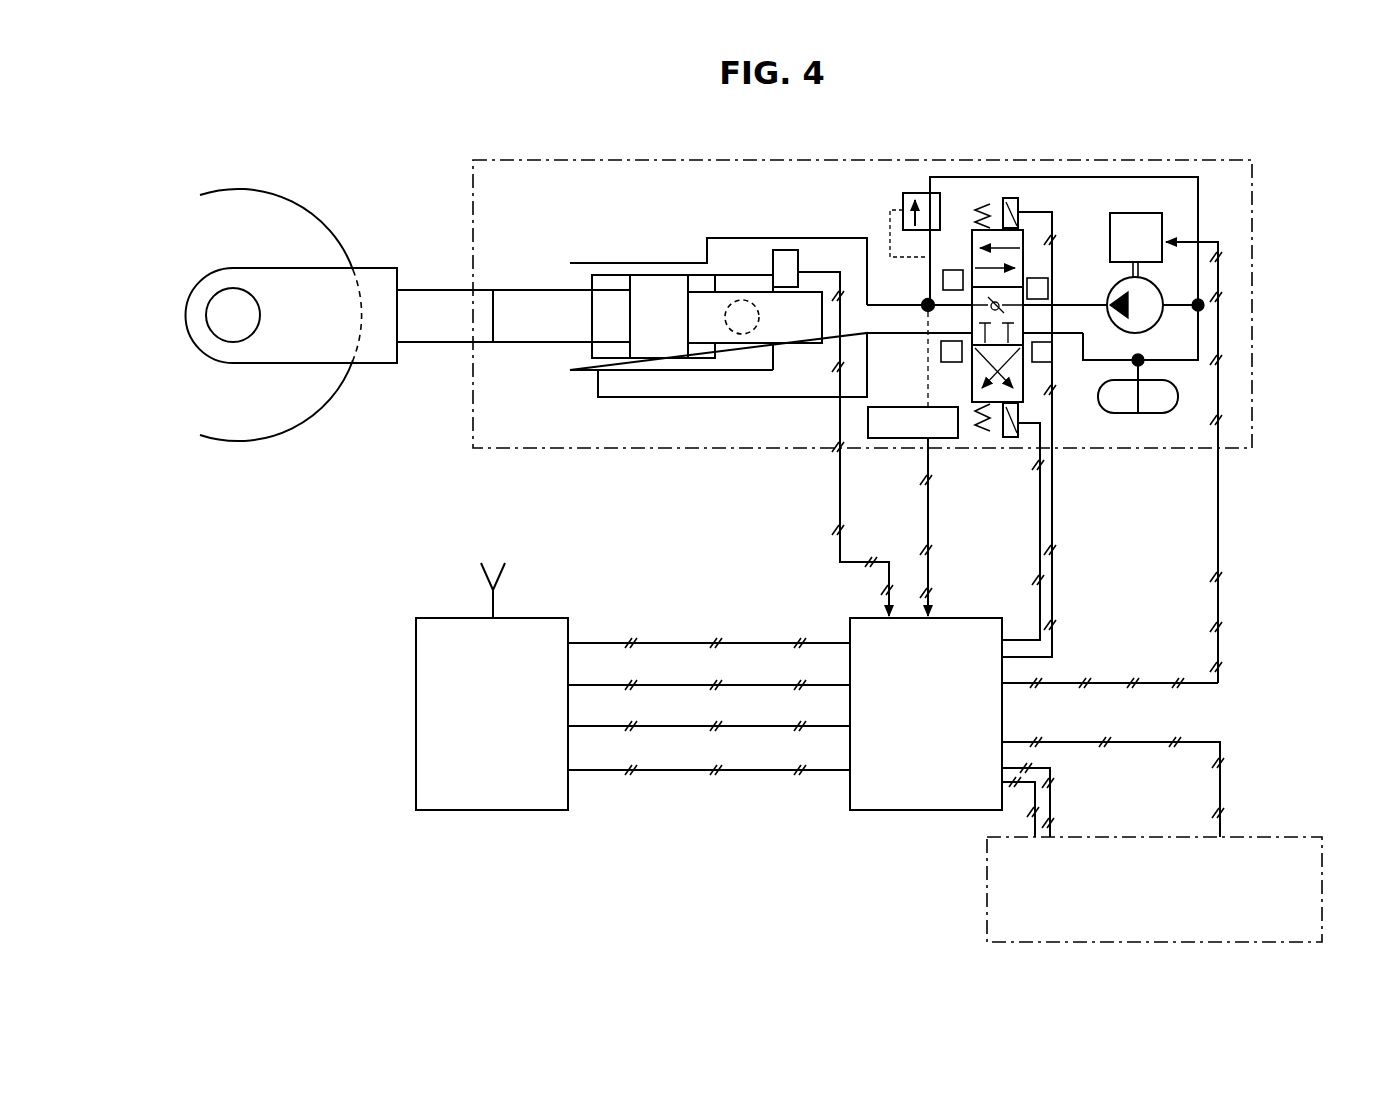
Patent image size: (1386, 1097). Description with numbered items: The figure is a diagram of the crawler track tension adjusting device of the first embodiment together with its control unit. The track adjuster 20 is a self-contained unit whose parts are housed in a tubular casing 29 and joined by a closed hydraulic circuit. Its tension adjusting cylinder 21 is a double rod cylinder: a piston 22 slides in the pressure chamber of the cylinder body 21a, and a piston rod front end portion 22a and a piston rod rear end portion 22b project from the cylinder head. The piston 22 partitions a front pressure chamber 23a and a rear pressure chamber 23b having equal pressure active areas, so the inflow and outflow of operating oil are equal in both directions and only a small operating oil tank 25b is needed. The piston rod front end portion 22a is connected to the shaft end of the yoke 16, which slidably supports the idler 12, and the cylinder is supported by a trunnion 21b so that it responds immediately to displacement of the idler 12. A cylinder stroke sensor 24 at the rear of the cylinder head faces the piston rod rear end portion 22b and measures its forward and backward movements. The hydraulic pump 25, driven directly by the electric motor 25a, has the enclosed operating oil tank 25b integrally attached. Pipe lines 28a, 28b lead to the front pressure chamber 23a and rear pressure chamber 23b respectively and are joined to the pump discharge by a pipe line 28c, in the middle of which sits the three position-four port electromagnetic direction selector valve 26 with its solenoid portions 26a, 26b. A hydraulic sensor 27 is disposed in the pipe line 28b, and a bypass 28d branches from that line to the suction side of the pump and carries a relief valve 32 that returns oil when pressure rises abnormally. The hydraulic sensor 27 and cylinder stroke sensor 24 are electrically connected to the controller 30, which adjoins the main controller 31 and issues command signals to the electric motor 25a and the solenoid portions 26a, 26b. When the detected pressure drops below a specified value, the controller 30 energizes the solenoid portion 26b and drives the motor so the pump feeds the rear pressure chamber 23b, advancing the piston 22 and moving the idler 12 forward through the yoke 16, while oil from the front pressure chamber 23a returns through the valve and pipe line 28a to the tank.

The idler 12 is at (279, 217).
The yoke 16 is at (310, 348).
The track adjuster 20 is at (483, 406).
The tension adjusting cylinder 21 is at (622, 258).
The cylinder body 21a is at (663, 262).
The trunnion 21b is at (738, 280).
The piston 22 is at (667, 343).
The piston rod front end portion 22a is at (540, 305).
The piston rod rear end portion 22b is at (805, 335).
The front pressure chamber 23a is at (608, 350).
The rear pressure chamber 23b is at (705, 353).
The cylinder stroke sensor 24 is at (798, 248).
The hydraulic pump 25 is at (1168, 292).
The electric motor 25a is at (1166, 234).
The operating oil tank 25b is at (1184, 385).
The electromagnetic direction selector valve 26 is at (1026, 210).
The solenoid portion 26a is at (1012, 198).
The solenoid portion 26b is at (1022, 431).
The hydraulic sensor 27 is at (955, 440).
The pipe line 28a is at (639, 398).
The pipe line 28b is at (765, 245).
The pipe line 28c is at (1078, 303).
The bypass 28d is at (958, 177).
The tubular casing 29 is at (1253, 358).
The controller 30 is at (913, 797).
The main controller 31 is at (498, 795).
The relief valve 32 is at (913, 190).